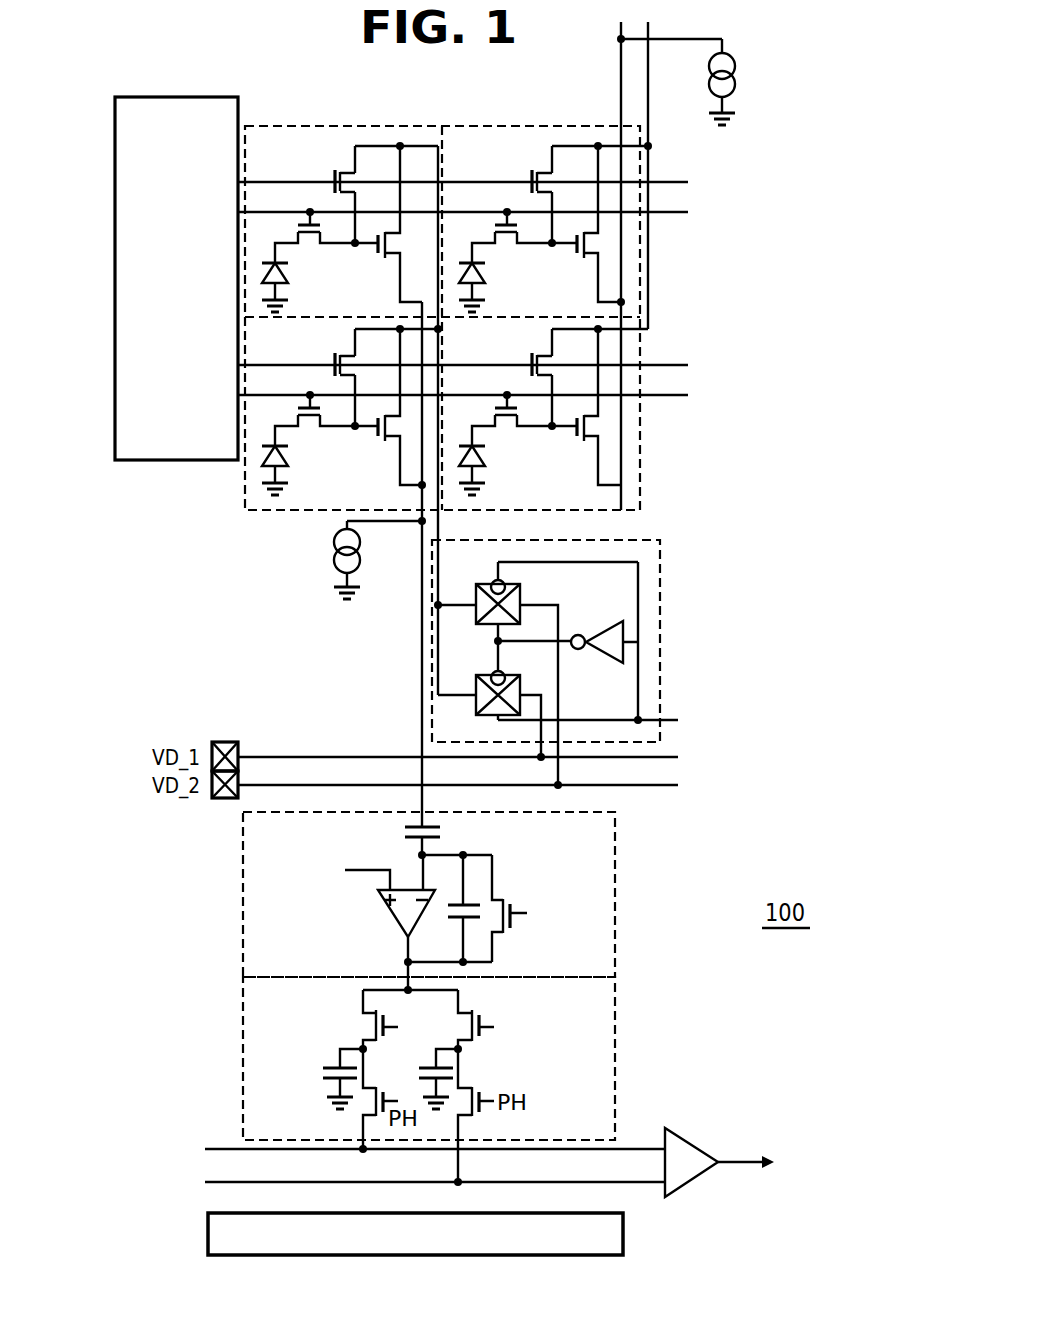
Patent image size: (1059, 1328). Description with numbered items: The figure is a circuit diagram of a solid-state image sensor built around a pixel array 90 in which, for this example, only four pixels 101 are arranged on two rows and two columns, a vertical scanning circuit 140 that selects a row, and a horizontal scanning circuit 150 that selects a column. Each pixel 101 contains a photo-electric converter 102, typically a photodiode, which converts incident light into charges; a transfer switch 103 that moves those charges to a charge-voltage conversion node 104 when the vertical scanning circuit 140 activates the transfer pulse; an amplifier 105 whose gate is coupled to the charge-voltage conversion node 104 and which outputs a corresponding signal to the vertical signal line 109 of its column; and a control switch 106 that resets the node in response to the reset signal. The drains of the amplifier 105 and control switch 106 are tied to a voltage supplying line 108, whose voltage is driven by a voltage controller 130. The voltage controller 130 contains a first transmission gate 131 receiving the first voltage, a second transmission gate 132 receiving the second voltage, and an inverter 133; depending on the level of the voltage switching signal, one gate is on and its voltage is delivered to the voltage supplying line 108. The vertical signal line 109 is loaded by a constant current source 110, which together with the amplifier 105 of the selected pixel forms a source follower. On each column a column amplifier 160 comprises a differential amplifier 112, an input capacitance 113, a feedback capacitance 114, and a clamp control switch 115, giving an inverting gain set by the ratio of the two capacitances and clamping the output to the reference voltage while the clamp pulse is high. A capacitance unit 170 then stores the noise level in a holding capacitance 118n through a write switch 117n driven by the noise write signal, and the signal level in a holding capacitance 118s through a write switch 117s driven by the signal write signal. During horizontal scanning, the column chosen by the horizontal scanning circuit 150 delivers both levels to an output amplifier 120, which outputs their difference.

The pixel array 90 is at (664, 341).
The pixel 101 is at (347, 122).
The photo-electric converter 102 is at (290, 466).
The transfer switch 103 is at (317, 422).
The charge-voltage conversion node 104 is at (355, 430).
The amplifier 105 is at (384, 440).
The control switch 106 is at (334, 360).
The voltage supplying line 108 is at (441, 523).
The vertical signal line 109 is at (621, 70).
The constant current source 110 is at (736, 70).
The differential amplifier 112 is at (385, 912).
The input capacitance 113 is at (443, 832).
The feedback capacitance 114 is at (449, 919).
The clamp control switch 115 is at (510, 898).
The write switch 117s is at (372, 1026).
The write switch 117n is at (484, 1014).
The holding capacitance 118s is at (322, 1069).
The holding capacitance 118n is at (420, 1071).
The output amplifier 120 is at (691, 1140).
The voltage controller 130 is at (660, 605).
The first transmission gate 131 is at (486, 673).
The second transmission gate 132 is at (522, 590).
The inverter 133 is at (600, 650).
The vertical scanning circuit 140 is at (175, 95).
The horizontal scanning circuit 150 is at (626, 1234).
The column amplifier 160 is at (615, 897).
The capacitance unit 170 is at (615, 1063).